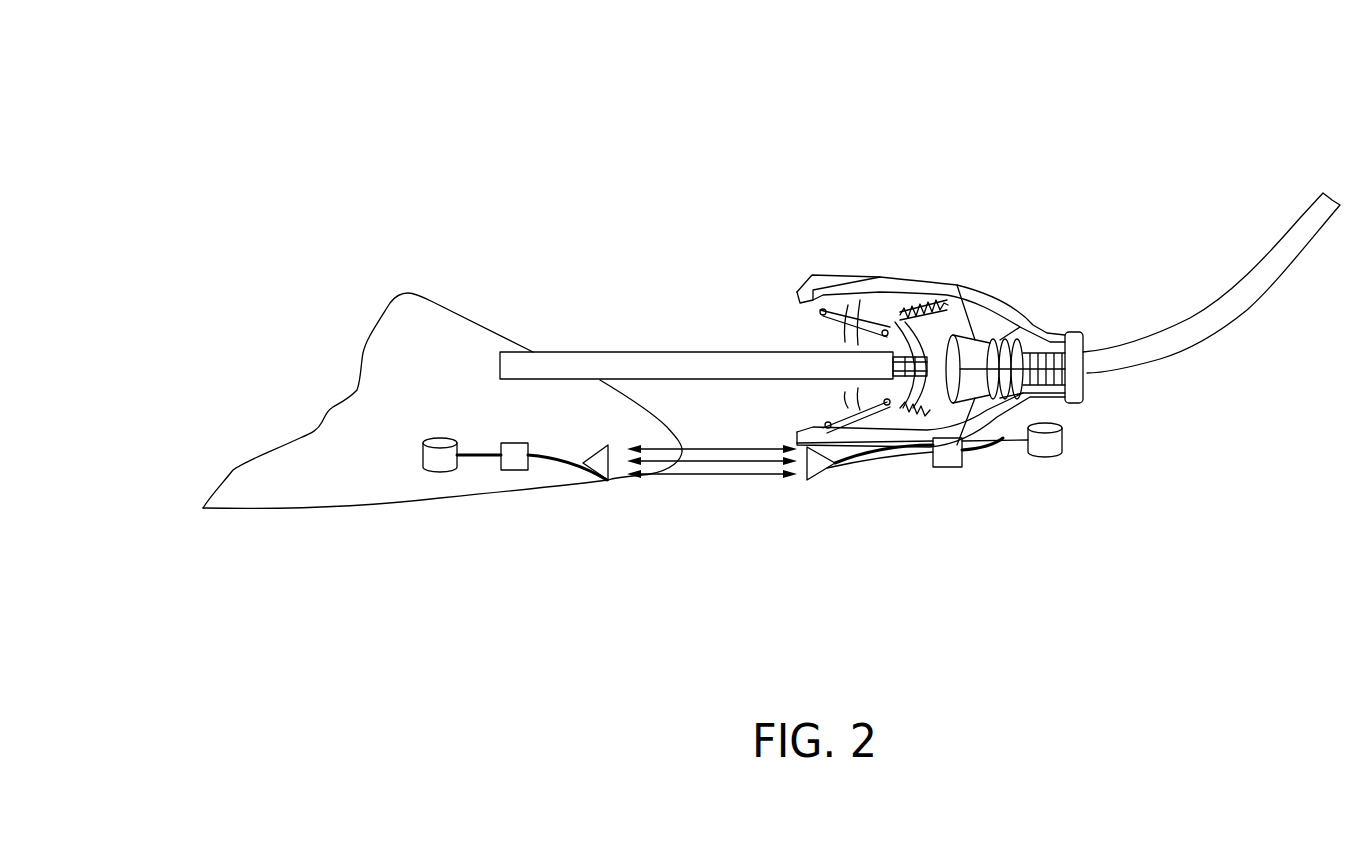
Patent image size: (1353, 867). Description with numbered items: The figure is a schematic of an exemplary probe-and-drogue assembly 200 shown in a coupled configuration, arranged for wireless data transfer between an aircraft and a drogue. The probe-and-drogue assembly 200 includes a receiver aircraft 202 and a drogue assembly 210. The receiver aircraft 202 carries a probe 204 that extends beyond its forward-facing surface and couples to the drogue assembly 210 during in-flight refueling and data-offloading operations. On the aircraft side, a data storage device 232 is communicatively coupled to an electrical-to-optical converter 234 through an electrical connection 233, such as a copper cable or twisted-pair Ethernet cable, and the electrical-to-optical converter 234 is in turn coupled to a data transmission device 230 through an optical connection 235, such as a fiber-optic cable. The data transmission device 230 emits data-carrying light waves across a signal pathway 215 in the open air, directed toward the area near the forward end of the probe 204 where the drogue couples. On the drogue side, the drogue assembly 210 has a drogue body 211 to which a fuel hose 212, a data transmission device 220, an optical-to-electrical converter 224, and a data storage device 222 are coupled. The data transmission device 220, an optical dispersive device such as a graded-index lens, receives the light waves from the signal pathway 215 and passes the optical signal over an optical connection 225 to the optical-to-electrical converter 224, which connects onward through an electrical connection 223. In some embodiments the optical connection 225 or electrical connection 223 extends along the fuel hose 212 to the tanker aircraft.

The probe-and-drogue assembly 200 is at (1032, 102).
The receiver aircraft 202 is at (475, 290).
The probe 204 is at (683, 350).
The drogue assembly 210 is at (992, 258).
The drogue body 211 is at (886, 278).
The fuel hose 212 is at (1296, 222).
The signal pathway 215 is at (717, 482).
The data transmission device 220 is at (813, 482).
The data storage device 222 is at (1063, 432).
The electrical connection 223 is at (1007, 441).
The optical-to-electrical converter 224 is at (947, 467).
The optical connection 225 is at (883, 453).
The data transmission device 230 is at (590, 477).
The data storage device 232 is at (440, 473).
The electrical connection 233 is at (480, 457).
The electrical-to-optical converter 234 is at (512, 470).
The optical connection 235 is at (553, 460).